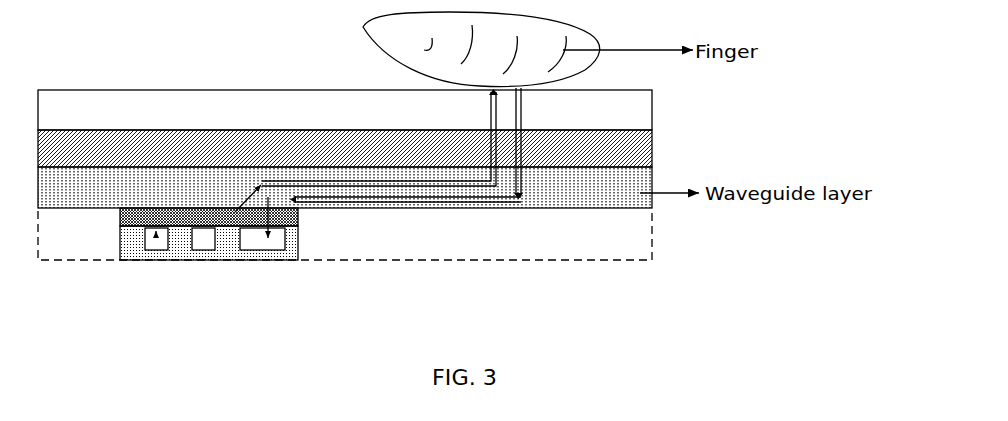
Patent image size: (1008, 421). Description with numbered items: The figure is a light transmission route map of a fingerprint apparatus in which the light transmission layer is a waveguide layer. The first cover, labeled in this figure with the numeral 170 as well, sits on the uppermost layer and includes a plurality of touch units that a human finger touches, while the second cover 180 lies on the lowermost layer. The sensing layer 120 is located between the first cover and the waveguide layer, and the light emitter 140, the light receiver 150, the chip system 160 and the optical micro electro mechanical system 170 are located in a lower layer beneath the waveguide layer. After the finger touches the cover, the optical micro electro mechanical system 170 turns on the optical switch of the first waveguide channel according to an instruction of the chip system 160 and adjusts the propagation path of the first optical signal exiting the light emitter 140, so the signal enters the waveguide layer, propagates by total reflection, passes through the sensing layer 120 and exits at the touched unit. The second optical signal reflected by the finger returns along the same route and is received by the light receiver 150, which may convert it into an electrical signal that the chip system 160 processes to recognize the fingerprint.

The optical micro electro mechanical system 170 is at (640, 110).
The sensing layer 120 is at (640, 146).
The second cover 180 is at (640, 240).
The light emitter 140 is at (157, 250).
The chip system 160 is at (203, 250).
The light receiver 150 is at (262, 250).